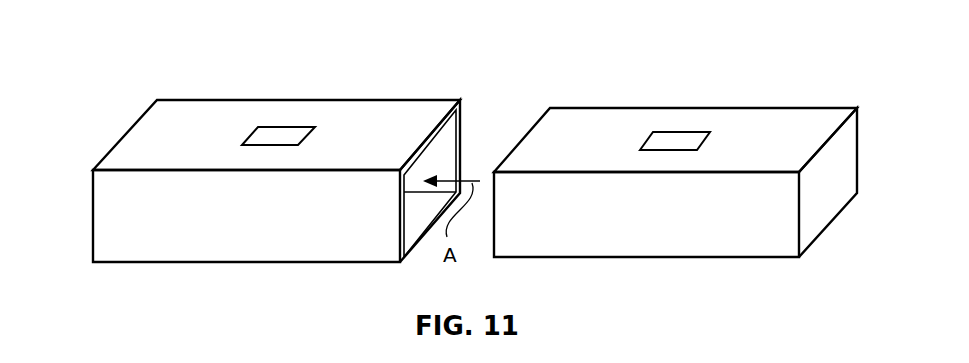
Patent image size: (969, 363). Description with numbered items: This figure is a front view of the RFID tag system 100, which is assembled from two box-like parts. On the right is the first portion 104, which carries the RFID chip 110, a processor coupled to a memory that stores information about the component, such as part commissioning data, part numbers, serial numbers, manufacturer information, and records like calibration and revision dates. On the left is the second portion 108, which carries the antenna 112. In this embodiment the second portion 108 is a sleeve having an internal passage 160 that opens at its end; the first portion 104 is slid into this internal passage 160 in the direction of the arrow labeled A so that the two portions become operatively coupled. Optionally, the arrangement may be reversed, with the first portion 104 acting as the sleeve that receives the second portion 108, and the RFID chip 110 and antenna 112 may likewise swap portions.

The RFID tag system 100 is at (144, 42).
The first portion 104 is at (803, 133).
The second portion 108 is at (132, 152).
The RFID chip 110 is at (677, 140).
The antenna 112 is at (280, 135).
The internal passage 160 is at (433, 162).